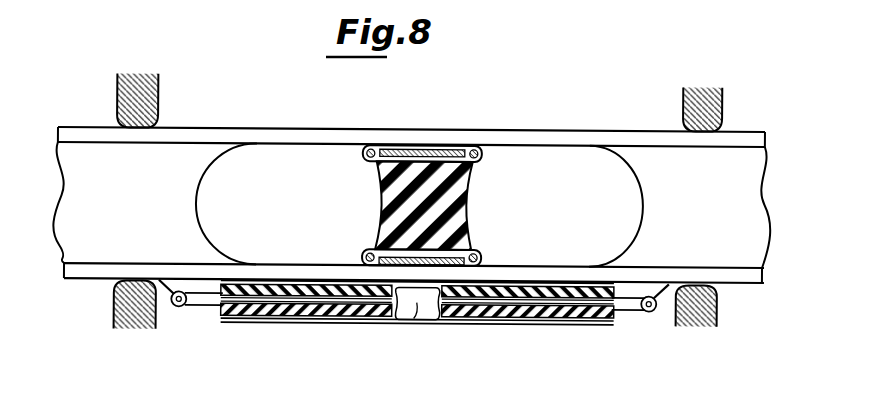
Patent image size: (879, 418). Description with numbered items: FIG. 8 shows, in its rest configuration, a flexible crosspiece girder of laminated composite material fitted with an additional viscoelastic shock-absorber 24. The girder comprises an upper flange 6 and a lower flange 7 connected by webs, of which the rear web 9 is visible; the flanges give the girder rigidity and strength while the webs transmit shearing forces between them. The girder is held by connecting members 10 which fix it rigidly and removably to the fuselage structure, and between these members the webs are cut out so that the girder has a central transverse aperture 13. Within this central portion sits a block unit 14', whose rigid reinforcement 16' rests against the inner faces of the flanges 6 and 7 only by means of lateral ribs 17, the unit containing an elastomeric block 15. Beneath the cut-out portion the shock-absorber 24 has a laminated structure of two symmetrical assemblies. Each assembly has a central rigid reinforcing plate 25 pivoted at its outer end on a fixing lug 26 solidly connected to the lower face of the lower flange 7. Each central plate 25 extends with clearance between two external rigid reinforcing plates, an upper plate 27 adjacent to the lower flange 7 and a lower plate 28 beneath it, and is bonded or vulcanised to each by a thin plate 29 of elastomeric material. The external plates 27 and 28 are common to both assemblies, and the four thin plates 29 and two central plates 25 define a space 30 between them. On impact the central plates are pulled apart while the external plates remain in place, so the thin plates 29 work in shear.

The upper flange 6 is at (332, 136).
The lower flange 7 is at (557, 271).
The rear web 9 is at (100, 187).
The connecting member 10 is at (147, 100).
The central transverse aperture 13 is at (258, 170).
The block unit 14' is at (320, 200).
The block 15 is at (450, 189).
The rigid reinforcement 16' is at (373, 171).
The lateral rib 17 is at (470, 148).
The viscoelastic shock-absorber 24 is at (574, 325).
The central rigid reinforcing plate 25 is at (278, 297).
The fixing lug 26 is at (164, 298).
The external rigid reinforcing plate 27 is at (410, 279).
The external rigid reinforcing plate 28 is at (465, 315).
The thin plate of elastomeric material 29 is at (307, 291).
The space 30 is at (428, 305).